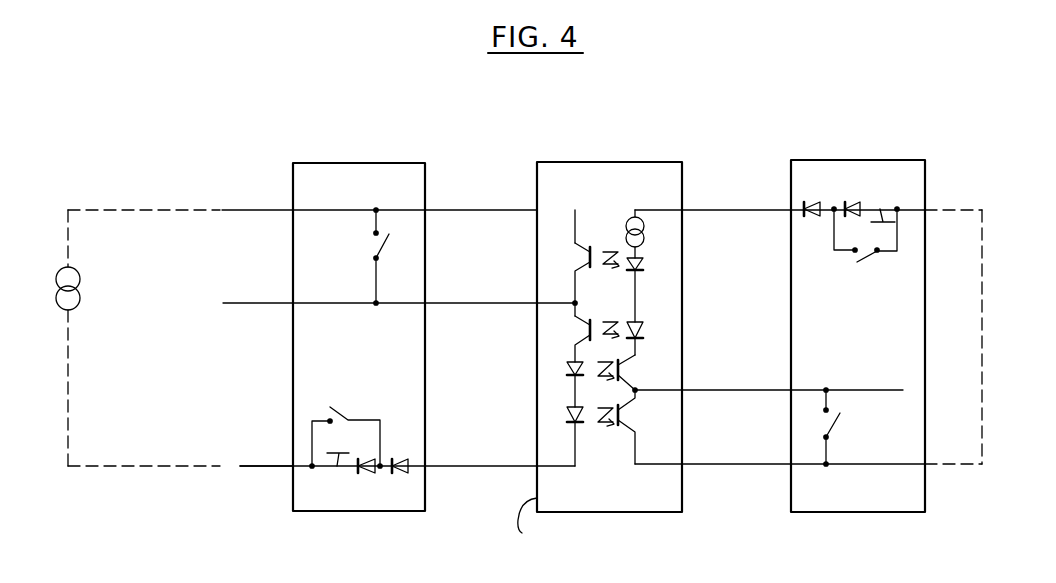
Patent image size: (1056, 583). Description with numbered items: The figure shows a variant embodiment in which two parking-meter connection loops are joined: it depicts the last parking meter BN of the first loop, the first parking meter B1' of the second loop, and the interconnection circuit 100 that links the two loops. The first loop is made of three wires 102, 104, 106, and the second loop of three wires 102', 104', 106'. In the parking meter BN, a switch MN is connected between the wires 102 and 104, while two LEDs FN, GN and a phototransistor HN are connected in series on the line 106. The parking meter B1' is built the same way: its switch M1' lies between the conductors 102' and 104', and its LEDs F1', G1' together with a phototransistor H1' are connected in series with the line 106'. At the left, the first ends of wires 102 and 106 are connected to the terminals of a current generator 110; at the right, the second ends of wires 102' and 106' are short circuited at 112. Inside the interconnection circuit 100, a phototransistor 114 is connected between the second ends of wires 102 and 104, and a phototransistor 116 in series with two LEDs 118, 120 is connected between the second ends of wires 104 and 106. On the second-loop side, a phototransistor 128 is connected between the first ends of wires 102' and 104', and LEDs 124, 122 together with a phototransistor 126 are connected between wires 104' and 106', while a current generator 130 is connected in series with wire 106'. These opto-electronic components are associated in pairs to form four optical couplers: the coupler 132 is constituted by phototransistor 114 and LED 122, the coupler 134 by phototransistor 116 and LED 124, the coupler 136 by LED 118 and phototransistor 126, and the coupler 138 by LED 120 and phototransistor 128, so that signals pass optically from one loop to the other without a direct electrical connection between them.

The interconnection circuit 100 is at (623, 164).
The wire 102 is at (415, 190).
The wire 104 is at (399, 289).
The wire 106 is at (407, 482).
The wire 102' is at (808, 483).
The wire 104' is at (769, 371).
The wire 106' is at (808, 189).
The current generator 110 is at (82, 296).
The short circuit 112 is at (983, 296).
The phototransistor 114 is at (575, 257).
The phototransistor 116 is at (575, 334).
The LED 118 is at (566, 374).
The LED 120 is at (566, 422).
The LED 122 is at (647, 265).
The LED 124 is at (650, 331).
The phototransistor 126 is at (630, 368).
The phototransistor 128 is at (628, 418).
The current generator 130 is at (646, 232).
The optical coupler 132 is at (605, 238).
The optical coupler 134 is at (609, 318).
The optical coupler 136 is at (606, 385).
The optical coupler 138 is at (606, 440).
The switch MN is at (386, 248).
The phototransistor HN is at (338, 470).
The LED FN is at (368, 474).
The LED GN is at (400, 474).
The parking meter BN is at (357, 512).
The switch M1' is at (850, 427).
The phototransistor H1' is at (894, 192).
The LED F1' is at (814, 189).
The LED G1' is at (866, 212).
The parking meter B1' is at (858, 364).